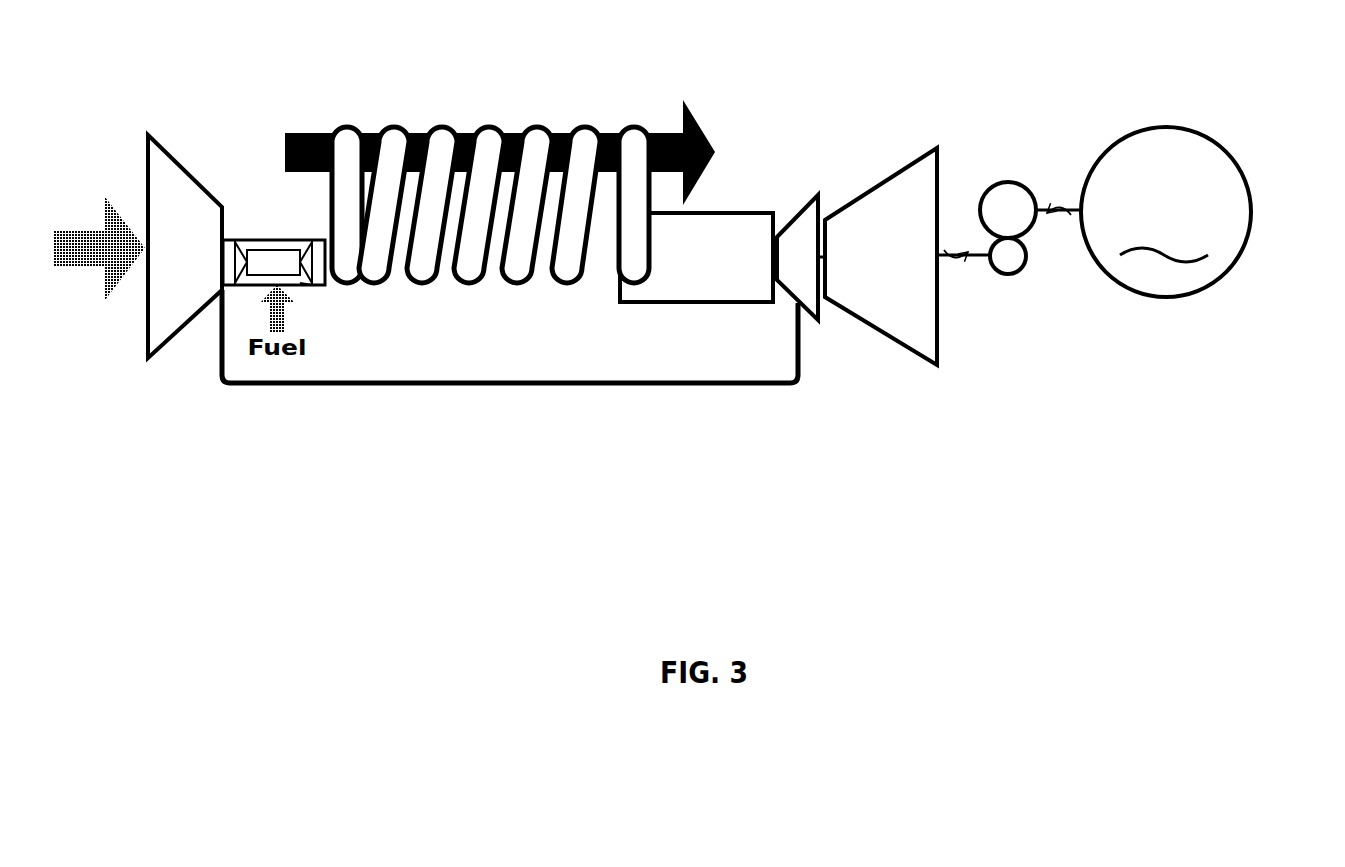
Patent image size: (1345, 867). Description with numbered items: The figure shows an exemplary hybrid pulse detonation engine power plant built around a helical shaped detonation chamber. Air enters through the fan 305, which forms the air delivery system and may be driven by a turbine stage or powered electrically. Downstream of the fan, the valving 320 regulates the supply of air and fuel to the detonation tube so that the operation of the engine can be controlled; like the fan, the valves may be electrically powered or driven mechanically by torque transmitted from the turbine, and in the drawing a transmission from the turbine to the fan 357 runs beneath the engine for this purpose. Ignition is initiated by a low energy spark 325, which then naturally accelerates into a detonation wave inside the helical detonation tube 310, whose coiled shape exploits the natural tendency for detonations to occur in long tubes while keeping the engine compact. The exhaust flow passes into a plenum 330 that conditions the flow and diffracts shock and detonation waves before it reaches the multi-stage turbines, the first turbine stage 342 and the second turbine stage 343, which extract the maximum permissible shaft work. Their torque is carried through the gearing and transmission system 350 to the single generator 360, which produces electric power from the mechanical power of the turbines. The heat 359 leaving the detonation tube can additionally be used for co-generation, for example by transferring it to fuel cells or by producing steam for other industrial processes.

The fan 305 is at (175, 340).
The helical detonation tube 310 is at (440, 120).
The valving 320 is at (267, 237).
The low energy spark 325 is at (302, 285).
The plenum 330 is at (680, 307).
The turbine stage 342 is at (815, 333).
The turbine stage 343 is at (953, 340).
The gearing and transmission system 350 is at (1010, 182).
The transmission from turbine to fan 357 is at (425, 390).
The heat from the detonation tubes 359 is at (712, 138).
The generator 360 is at (1225, 292).